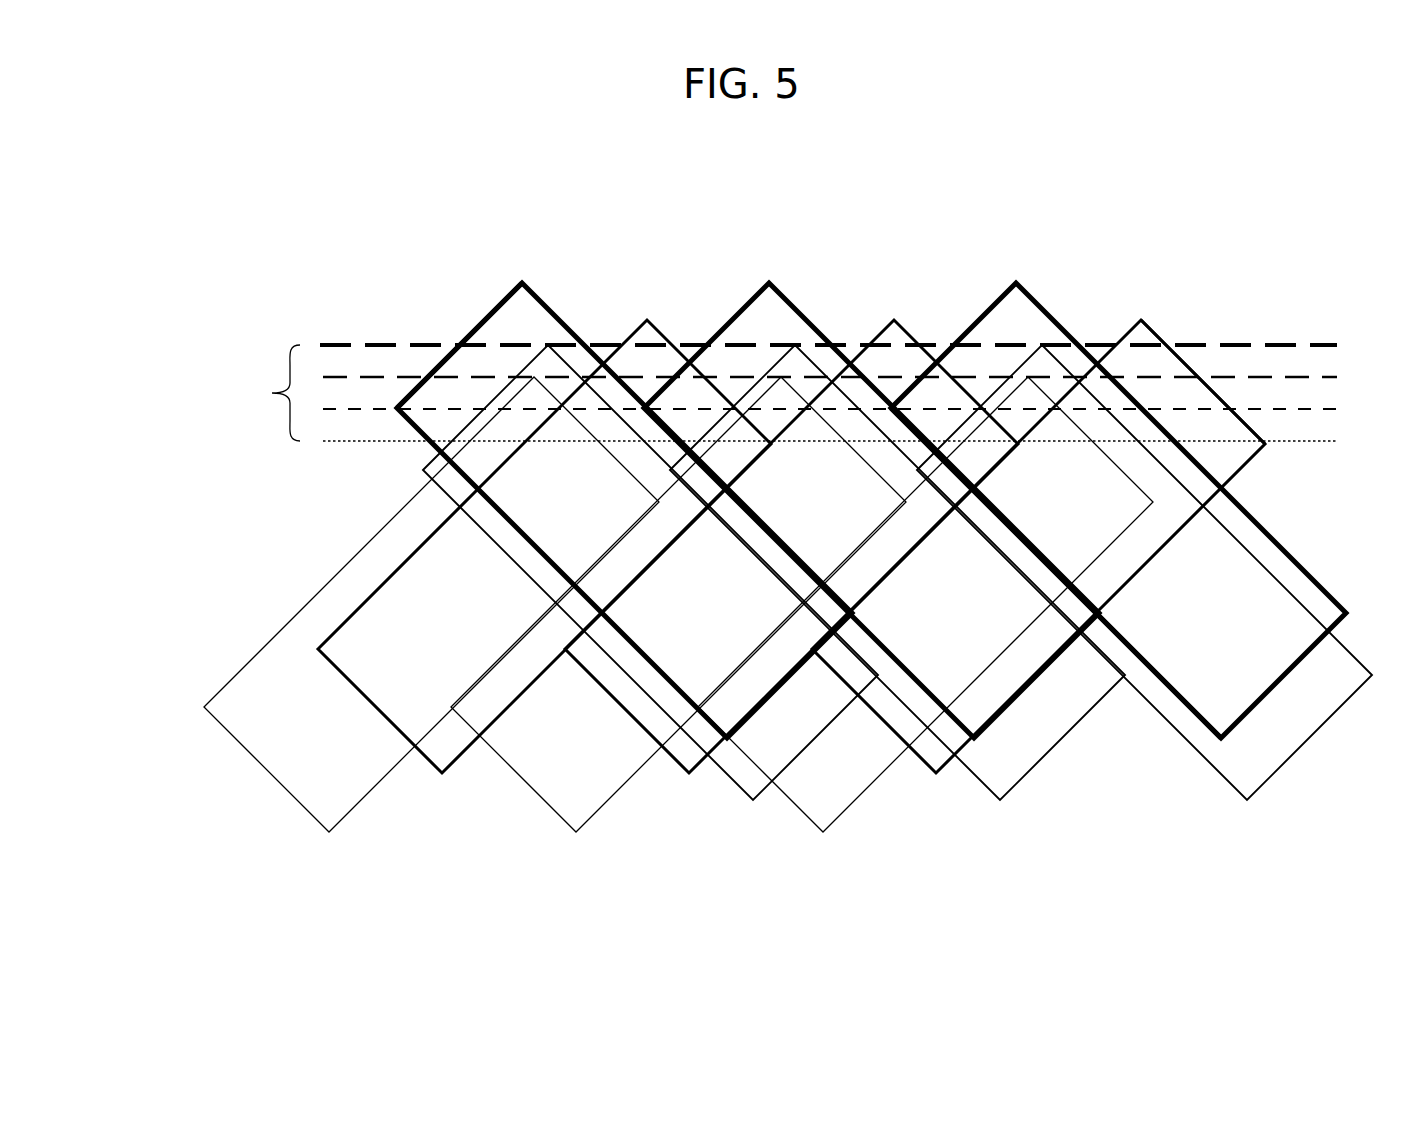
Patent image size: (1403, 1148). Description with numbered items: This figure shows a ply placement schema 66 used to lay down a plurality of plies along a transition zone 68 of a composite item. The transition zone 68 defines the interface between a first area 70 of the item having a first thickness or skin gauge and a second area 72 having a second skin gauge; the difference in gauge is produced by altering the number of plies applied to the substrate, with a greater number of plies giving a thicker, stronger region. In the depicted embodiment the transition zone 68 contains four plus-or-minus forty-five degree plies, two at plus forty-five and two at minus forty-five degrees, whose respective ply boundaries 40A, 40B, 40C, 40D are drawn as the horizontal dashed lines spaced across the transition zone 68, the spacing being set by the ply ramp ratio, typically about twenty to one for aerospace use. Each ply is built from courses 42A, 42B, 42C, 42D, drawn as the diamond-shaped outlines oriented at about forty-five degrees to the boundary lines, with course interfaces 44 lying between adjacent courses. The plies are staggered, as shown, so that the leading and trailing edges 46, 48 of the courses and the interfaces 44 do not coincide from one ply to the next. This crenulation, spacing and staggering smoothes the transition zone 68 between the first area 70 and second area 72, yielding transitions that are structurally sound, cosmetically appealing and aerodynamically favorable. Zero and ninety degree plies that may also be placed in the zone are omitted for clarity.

The ply boundary 40A is at (322, 441).
The ply boundary 40B is at (326, 409).
The ply boundary 40C is at (326, 377).
The ply boundary 40D is at (320, 345).
The course 42A is at (329, 832).
The course 42B is at (753, 800).
The course 42C is at (647, 320).
The course 42D is at (522, 283).
The course interface 44 is at (1022, 538).
The leading edge 46 is at (831, 347).
The trailing edge 48 is at (499, 306).
The ply placement schema 66 is at (905, 150).
The transition zone 68 is at (276, 393).
The first area 70 is at (395, 506).
The second area 72 is at (395, 291).